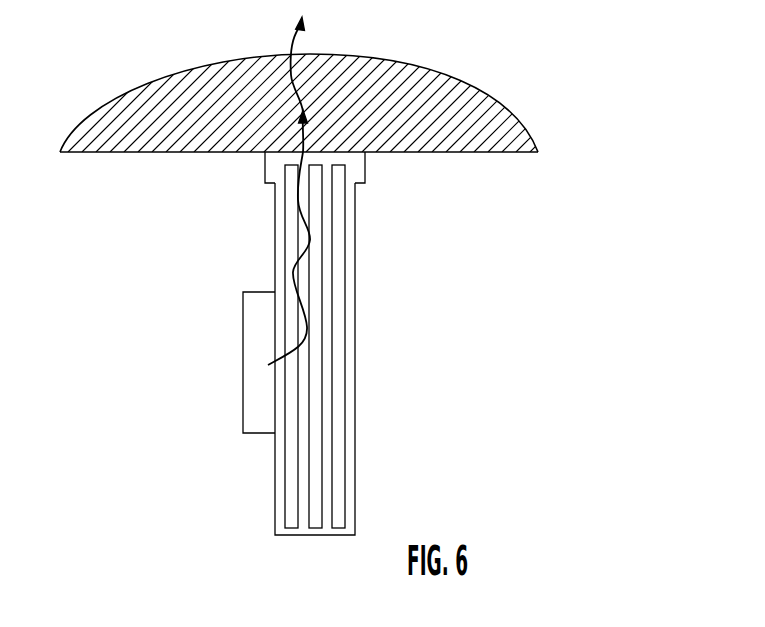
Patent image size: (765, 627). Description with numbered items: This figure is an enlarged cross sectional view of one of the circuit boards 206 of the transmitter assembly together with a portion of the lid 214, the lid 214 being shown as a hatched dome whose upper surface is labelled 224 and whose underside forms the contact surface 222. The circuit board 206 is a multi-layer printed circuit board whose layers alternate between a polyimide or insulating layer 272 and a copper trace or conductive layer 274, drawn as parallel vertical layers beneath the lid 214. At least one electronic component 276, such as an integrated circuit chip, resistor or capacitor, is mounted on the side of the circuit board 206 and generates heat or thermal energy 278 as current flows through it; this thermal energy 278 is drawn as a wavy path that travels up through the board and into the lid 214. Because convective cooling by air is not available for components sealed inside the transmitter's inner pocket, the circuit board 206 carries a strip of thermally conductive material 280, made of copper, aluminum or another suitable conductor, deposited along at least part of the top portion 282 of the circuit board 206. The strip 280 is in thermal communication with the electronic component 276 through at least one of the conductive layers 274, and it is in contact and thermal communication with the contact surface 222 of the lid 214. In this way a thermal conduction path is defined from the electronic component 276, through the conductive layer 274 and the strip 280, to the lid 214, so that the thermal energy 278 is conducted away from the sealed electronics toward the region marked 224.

The circuit board 206 is at (327, 373).
The lid 214 is at (345, 120).
The contact surface 222 is at (123, 152).
The top surface of cap 224 is at (208, 65).
The insulating layer 272 is at (280, 515).
The conductive layer 274 is at (293, 522).
The electronic component 276 is at (250, 392).
The thermal energy 278 is at (290, 53).
The strip of thermally conductive material 280 is at (357, 155).
The top portion 282 is at (329, 170).